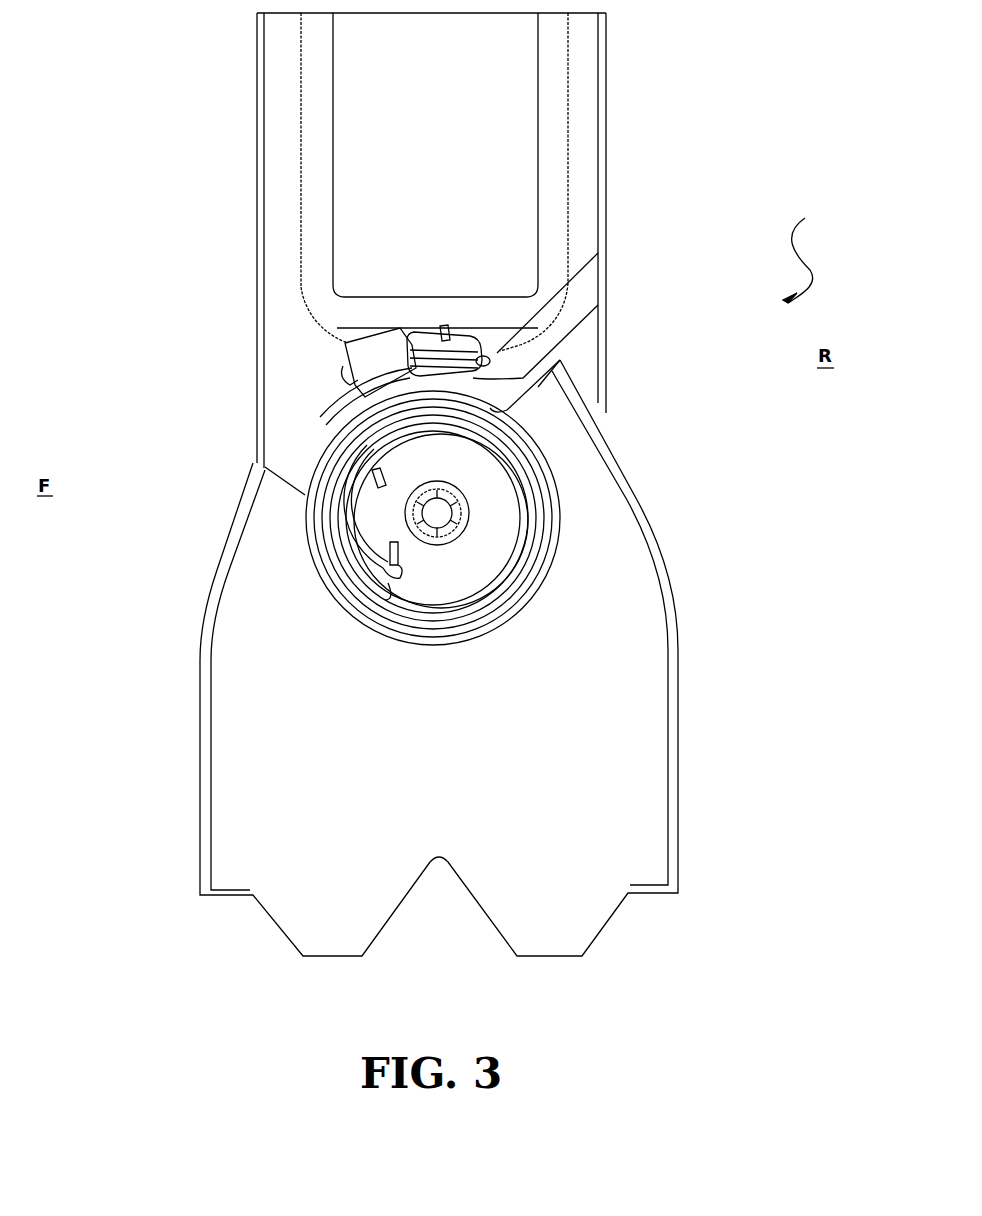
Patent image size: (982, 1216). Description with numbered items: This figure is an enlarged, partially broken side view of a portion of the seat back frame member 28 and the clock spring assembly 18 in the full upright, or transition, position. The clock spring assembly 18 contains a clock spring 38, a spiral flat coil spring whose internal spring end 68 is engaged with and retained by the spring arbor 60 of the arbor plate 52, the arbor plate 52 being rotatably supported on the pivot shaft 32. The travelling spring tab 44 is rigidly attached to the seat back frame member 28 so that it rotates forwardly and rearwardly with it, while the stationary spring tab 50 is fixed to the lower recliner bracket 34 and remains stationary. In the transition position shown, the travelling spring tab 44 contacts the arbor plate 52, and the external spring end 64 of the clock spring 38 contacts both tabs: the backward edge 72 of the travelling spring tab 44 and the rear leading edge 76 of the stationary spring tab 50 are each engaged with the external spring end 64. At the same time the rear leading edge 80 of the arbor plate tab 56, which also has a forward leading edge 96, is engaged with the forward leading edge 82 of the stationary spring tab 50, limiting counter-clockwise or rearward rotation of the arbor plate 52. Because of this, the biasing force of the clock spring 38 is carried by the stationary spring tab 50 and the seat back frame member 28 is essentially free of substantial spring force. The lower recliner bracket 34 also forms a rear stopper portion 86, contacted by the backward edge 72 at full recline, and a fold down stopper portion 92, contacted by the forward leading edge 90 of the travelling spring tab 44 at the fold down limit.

The seat back frame member 28 is at (606, 45).
The clock spring assembly 18 is at (809, 248).
The travelling spring tab 44 is at (437, 332).
The external spring end 64 is at (446, 326).
The stationary spring tab 50 is at (410, 330).
The backward edge 72 is at (598, 253).
The rear leading edge 76 is at (598, 305).
The forward leading edge 90 is at (375, 342).
The arbor plate tab 56 is at (345, 347).
The rear leading edge 80 is at (350, 372).
The forward leading edge 96 is at (355, 390).
The forward leading edge 82 is at (375, 400).
The rear stopper portion 86 is at (543, 377).
The clock spring 38 is at (555, 505).
The fold down stopper portion 92 is at (280, 477).
The pivot shaft 32 is at (440, 512).
The spring arbor 60 is at (372, 557).
The internal spring end 68 is at (385, 583).
The arbor plate 52 is at (487, 580).
The lower recliner bracket 34 is at (684, 690).